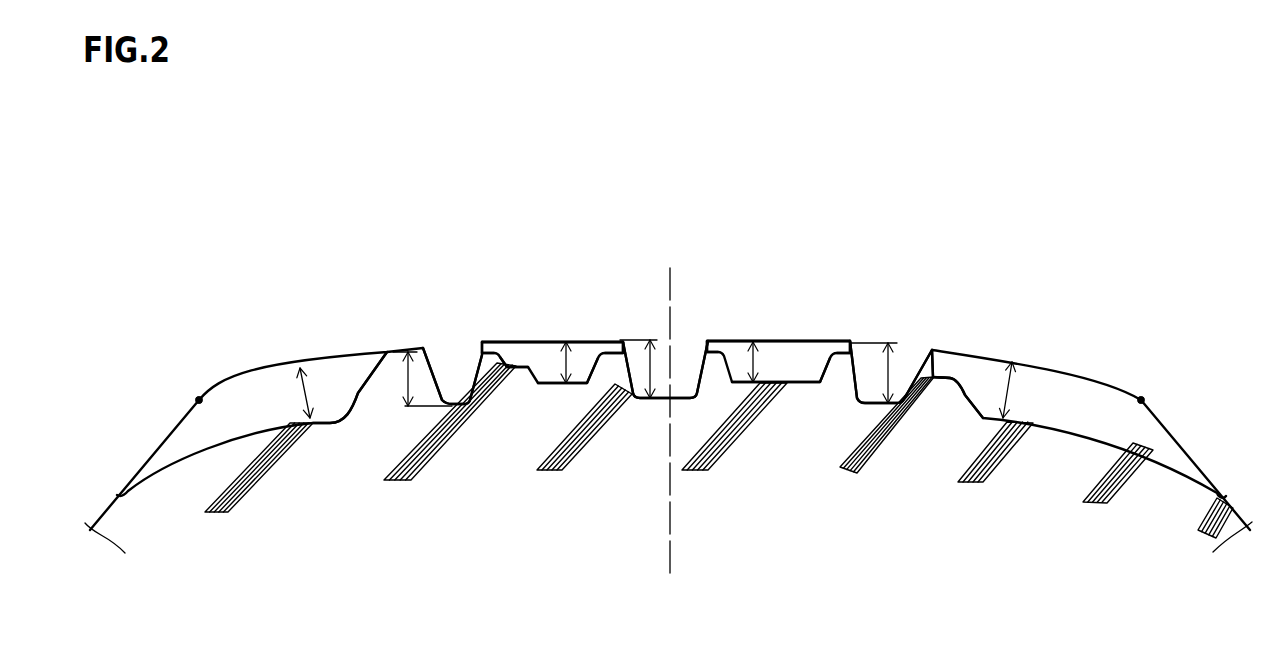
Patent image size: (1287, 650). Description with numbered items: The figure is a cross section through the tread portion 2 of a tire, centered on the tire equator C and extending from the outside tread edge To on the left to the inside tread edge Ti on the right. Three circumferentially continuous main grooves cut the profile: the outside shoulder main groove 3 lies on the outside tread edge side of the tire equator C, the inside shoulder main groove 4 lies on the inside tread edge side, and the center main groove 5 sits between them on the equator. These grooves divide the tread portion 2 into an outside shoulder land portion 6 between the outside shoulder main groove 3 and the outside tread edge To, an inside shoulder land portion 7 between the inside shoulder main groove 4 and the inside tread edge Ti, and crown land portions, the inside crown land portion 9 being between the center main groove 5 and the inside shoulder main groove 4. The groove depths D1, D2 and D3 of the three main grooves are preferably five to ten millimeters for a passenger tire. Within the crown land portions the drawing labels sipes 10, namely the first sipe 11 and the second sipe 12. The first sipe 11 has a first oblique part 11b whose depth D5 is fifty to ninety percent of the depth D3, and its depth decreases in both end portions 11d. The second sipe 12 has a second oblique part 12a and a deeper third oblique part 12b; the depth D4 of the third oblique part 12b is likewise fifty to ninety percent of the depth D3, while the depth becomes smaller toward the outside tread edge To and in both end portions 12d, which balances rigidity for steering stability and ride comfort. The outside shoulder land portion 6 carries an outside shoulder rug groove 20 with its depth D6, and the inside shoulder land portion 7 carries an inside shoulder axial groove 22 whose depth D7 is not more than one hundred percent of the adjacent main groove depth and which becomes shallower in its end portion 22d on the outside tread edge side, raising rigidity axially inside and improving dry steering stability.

The tread portion 2 is at (1158, 163).
The outside shoulder main groove 3 is at (441, 365).
The inside shoulder main groove 4 is at (918, 357).
The center main groove 5 is at (685, 355).
The outside shoulder land portion 6 is at (253, 366).
The inside shoulder land portion 7 is at (1078, 360).
The inside crown land portion 9 is at (798, 337).
The middle land portion 10 is at (538, 353).
The first sipe 11 is at (780, 357).
The second sipe 12 is at (547, 337).
The second oblique part 12a is at (515, 360).
The third oblique part 12b is at (588, 353).
The end portion of second sipe 12d is at (490, 357).
The first oblique part 11b is at (815, 357).
The end portion of first sipe 11d is at (713, 347).
The outside shoulder rug groove 20 is at (350, 378).
The inside shoulder axial groove 22 is at (1047, 375).
The end portion of inside shoulder axial groove 22d is at (943, 357).
The tire equator C is at (670, 410).
The outside tread edge To is at (199, 400).
The inside tread edge Ti is at (1141, 400).
The depth of outside shoulder main groove D1 is at (407, 377).
The depth of inside shoulder main groove D2 is at (888, 377).
The depth of center main groove D3 is at (650, 370).
The depth of third oblique part D4 is at (567, 365).
The depth of first oblique part D5 is at (753, 365).
The depth of outer shoulder lateral groove D6 is at (307, 392).
The depth of inside shoulder axial groove D7 is at (1010, 392).